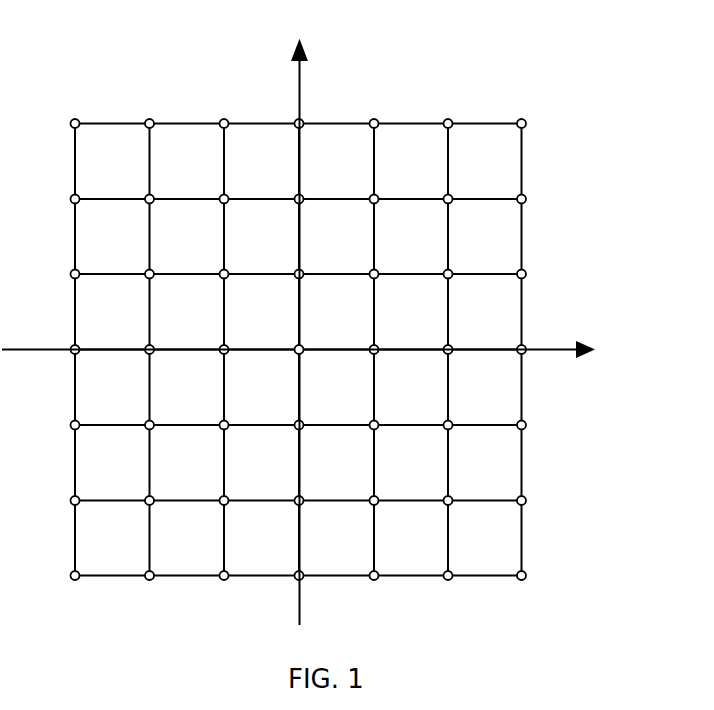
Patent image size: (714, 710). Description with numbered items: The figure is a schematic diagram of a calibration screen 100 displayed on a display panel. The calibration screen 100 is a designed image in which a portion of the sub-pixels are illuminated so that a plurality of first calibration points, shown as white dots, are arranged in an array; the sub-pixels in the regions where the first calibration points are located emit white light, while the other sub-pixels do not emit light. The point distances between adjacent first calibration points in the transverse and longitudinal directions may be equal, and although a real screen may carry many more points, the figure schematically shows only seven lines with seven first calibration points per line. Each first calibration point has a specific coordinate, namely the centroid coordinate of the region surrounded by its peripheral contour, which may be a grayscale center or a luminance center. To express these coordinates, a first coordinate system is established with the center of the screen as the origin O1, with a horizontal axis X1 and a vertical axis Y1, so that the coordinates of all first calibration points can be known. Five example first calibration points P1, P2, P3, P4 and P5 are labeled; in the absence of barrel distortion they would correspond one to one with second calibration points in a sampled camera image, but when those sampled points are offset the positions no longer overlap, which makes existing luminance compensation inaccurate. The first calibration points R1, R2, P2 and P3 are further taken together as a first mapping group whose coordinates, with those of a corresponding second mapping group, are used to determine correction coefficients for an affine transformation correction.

The calibration screen 100 is at (110, 78).
The X1 axis of first coordinate system X1 is at (320, 350).
The Y1 axis of first coordinate system Y1 is at (301, 318).
The origin of first coordinate system O1 is at (286, 363).
The first calibration point P1 is at (187, 236).
The first calibration point P2 is at (261, 236).
The first calibration point P3 is at (336, 236).
The first calibration point P4 is at (411, 236).
The first calibration point P5 is at (485, 236).
The first calibration point R1 is at (336, 312).
The first calibration point R2 is at (261, 312).